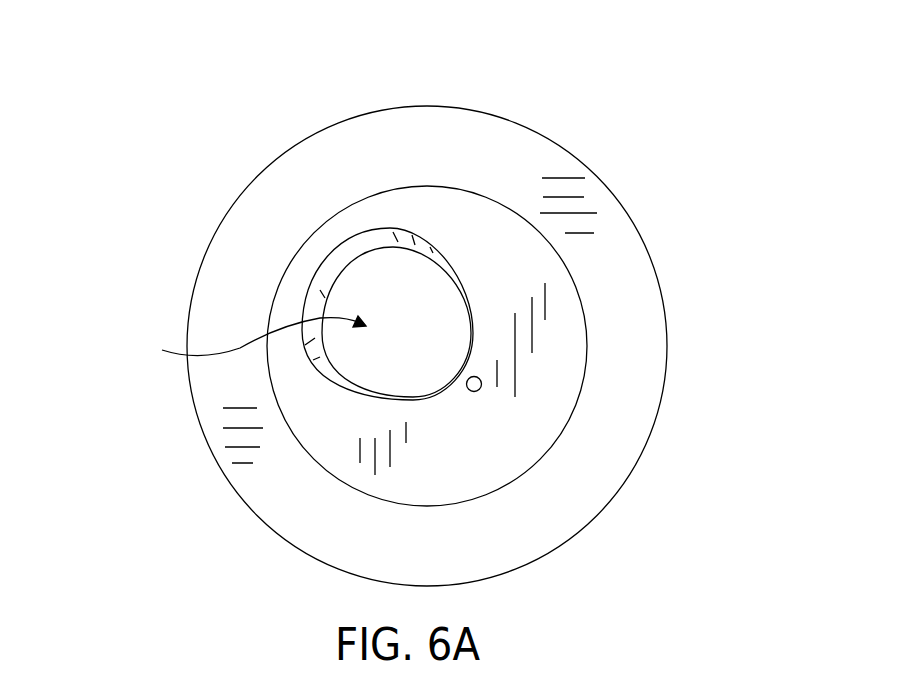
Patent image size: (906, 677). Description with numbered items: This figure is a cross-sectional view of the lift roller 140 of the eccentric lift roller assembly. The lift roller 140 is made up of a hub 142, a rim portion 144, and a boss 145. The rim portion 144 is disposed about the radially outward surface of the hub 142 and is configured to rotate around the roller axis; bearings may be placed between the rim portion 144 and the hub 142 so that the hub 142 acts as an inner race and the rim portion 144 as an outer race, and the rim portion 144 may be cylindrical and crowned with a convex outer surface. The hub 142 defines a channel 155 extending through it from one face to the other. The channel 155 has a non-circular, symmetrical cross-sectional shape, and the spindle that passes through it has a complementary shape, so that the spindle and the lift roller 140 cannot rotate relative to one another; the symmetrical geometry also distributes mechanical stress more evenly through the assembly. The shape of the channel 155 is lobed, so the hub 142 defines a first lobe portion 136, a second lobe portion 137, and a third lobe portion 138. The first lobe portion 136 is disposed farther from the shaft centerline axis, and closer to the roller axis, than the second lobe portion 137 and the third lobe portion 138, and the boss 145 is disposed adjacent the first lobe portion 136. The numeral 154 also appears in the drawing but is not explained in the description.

The lift roller 140 is at (110, 89).
The rim portion 144 is at (497, 148).
The hub 142 is at (523, 278).
The third lobe portion 138 is at (398, 255).
The first lobe portion 136 is at (443, 380).
The lip band 154 is at (333, 270).
The second lobe portion 137 is at (333, 360).
The channel 155 is at (241, 339).
The boss 145 is at (476, 391).